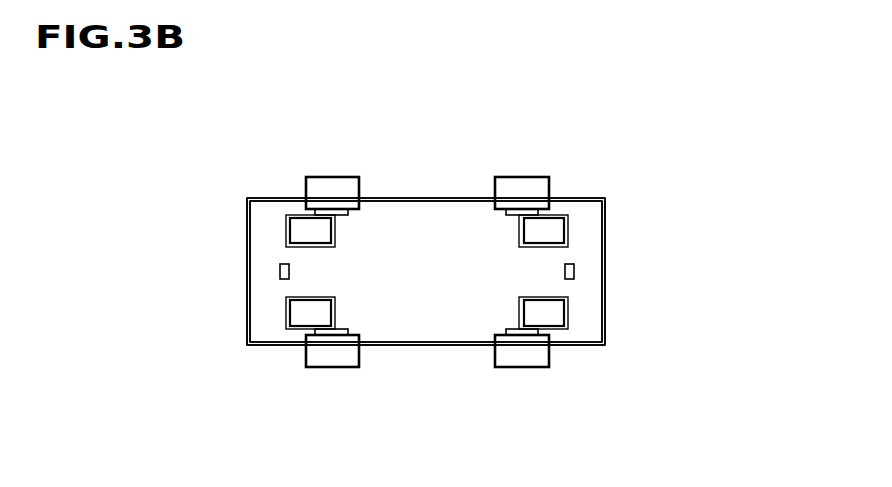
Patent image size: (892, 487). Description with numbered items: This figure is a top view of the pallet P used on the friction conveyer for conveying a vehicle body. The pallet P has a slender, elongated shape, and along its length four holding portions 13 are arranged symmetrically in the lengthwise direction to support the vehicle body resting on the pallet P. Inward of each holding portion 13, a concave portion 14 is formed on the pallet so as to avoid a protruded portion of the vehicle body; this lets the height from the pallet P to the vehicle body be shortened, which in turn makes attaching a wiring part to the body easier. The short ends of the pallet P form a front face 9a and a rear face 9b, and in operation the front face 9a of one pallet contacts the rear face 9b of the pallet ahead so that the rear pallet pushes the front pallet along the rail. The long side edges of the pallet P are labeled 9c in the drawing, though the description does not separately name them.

The holding portion 13 is at (326, 188).
The concave portion 14 is at (318, 230).
The front face 9a is at (248, 268).
The rear face 9b is at (606, 272).
The third side surface of substrate 9c is at (568, 198).
The pallet P is at (597, 217).